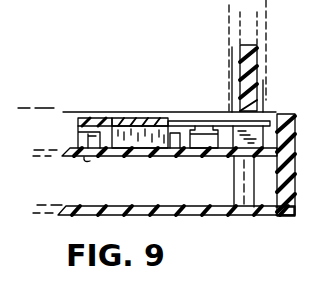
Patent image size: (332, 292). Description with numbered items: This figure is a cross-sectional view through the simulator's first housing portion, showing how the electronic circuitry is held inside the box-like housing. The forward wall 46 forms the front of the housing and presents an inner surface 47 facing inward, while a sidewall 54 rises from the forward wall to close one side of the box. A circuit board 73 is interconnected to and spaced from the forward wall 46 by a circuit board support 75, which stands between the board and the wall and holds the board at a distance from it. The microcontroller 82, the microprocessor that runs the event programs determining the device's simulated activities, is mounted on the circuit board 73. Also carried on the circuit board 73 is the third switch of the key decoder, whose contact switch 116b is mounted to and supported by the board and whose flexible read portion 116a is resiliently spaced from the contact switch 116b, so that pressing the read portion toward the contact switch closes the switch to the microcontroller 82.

The circuit board 73 is at (72, 146).
The microcontroller 82 is at (122, 140).
The flexible read portion 116a is at (190, 125).
The contact switch 116b is at (216, 135).
The sidewall 54 is at (294, 152).
The circuit board support 75 is at (234, 197).
The inner surface 47 is at (179, 210).
The forward wall 46 is at (260, 214).